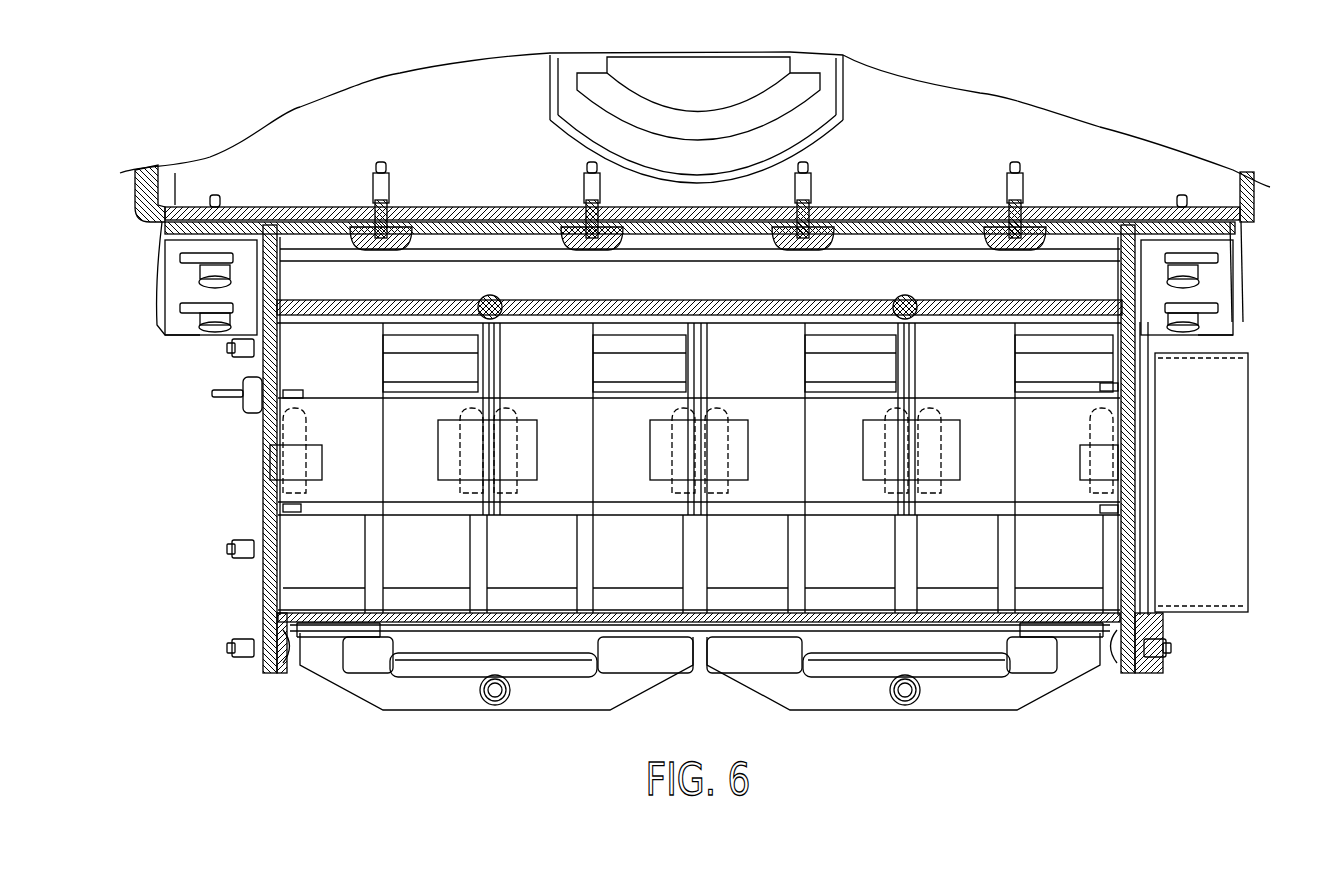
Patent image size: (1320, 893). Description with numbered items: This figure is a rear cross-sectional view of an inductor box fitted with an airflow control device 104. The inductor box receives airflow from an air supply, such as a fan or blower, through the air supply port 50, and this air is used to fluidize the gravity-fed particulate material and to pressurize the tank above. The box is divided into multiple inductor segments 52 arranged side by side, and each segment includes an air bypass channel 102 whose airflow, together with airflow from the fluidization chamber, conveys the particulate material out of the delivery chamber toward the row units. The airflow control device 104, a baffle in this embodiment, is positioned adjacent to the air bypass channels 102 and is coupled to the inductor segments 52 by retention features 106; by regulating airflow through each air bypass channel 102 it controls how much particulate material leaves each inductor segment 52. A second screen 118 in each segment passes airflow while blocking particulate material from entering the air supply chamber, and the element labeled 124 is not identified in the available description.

The air supply port 50 is at (1248, 612).
The inductor segments 52 is at (318, 292).
The air bypass channel 102 is at (307, 427).
The airflow control device 104 is at (282, 495).
The retention features 106 is at (312, 397).
The second screen 118 is at (320, 597).
The connector blocks 124 is at (323, 448).